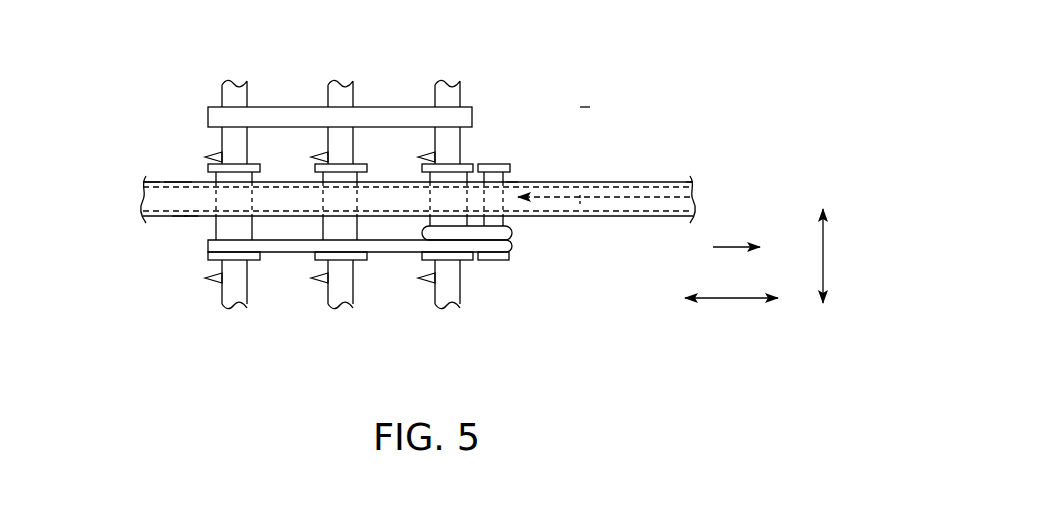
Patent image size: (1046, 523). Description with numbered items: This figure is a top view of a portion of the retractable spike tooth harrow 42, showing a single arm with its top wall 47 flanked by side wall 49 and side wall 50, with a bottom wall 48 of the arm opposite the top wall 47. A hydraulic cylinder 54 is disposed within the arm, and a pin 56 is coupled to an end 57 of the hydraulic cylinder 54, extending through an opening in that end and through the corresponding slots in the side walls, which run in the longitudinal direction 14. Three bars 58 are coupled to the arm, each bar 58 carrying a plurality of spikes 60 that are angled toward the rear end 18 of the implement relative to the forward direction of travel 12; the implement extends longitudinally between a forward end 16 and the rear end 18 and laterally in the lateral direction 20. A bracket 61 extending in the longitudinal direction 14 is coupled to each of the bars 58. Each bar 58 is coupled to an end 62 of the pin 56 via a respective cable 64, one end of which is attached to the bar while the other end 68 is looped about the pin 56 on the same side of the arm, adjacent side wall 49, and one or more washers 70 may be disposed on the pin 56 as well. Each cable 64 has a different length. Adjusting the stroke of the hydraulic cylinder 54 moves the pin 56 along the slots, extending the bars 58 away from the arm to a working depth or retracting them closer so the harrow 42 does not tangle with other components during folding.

The forward direction of travel 12 is at (732, 247).
The longitudinal direction 14 is at (730, 298).
The forward end 16 is at (729, 174).
The rear end 18 is at (124, 208).
The lateral direction 20 is at (825, 253).
The retractable spike tooth harrow 42 is at (585, 74).
The top wall 47 is at (180, 214).
The outer wall 48 is at (191, 222).
The side wall 49 is at (171, 181).
The side wall 50 is at (184, 181).
The hydraulic cylinder 54 is at (614, 184).
The pin 56 is at (496, 164).
The end of the hydraulic cylinder 57 is at (545, 184).
The bars 58 is at (248, 282).
The spikes 60 is at (428, 281).
The bracket 61 is at (418, 107).
The end of the pin 62 is at (518, 274).
The cable 64 is at (290, 252).
The end of the cable 68 is at (512, 244).
The washers 70 is at (511, 181).